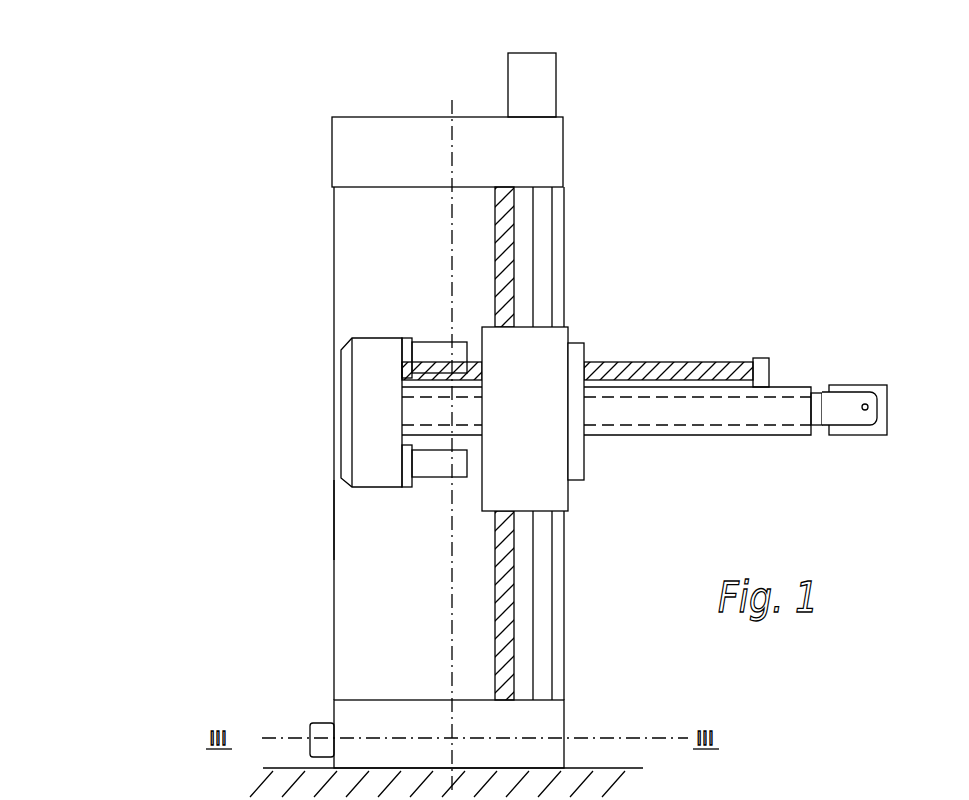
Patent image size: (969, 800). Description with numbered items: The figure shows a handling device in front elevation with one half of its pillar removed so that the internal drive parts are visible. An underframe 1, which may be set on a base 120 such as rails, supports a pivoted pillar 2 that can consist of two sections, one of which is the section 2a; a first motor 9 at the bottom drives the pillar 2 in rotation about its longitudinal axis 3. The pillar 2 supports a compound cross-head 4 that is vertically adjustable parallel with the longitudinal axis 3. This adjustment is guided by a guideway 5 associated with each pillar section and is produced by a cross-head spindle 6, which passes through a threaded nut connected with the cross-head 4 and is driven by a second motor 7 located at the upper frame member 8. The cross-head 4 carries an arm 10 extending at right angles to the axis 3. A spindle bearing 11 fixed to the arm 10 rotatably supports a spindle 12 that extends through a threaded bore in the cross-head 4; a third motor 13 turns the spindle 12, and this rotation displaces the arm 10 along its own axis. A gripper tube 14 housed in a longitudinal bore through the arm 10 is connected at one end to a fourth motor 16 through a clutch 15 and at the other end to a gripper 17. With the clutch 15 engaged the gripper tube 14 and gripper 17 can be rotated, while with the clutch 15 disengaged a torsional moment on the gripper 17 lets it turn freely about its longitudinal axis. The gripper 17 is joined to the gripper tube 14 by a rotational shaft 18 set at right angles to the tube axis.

The underframe 1 is at (566, 720).
The pivoted pillar 2 is at (566, 632).
The pillar section 2a is at (348, 533).
The longitudinal axis of the pillar 3 is at (452, 107).
The cross-head 4 is at (567, 328).
The guideway 5 is at (552, 233).
The cross-head spindle 6 is at (513, 562).
The second motor 7 is at (555, 90).
The upper frame member 8 is at (564, 147).
The first motor 9 is at (318, 723).
The arm 10 is at (677, 436).
The spindle bearing 11 is at (761, 357).
The spindle 12 is at (663, 362).
The third motor 13 is at (428, 342).
The gripper tube 14 is at (816, 393).
The coupling (clutch) 15 is at (406, 488).
The fourth motor 16 is at (436, 478).
The gripper 17 is at (852, 437).
The rotational shaft 18 is at (865, 404).
The base 120 is at (643, 768).